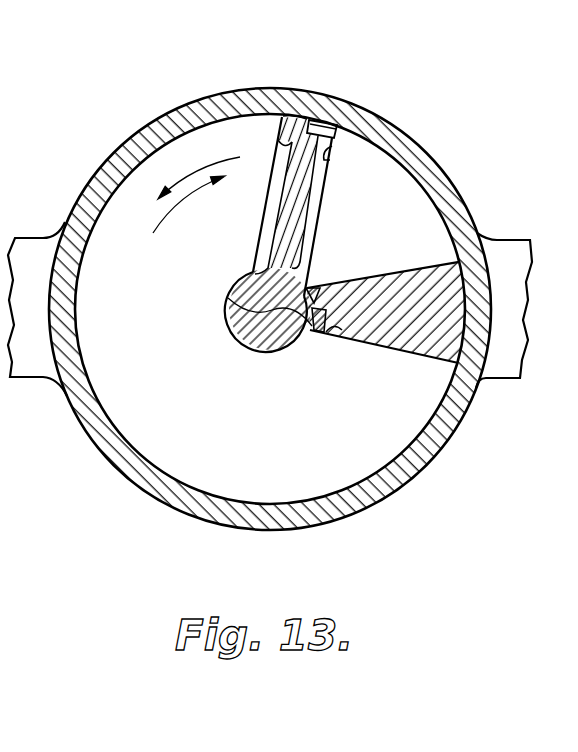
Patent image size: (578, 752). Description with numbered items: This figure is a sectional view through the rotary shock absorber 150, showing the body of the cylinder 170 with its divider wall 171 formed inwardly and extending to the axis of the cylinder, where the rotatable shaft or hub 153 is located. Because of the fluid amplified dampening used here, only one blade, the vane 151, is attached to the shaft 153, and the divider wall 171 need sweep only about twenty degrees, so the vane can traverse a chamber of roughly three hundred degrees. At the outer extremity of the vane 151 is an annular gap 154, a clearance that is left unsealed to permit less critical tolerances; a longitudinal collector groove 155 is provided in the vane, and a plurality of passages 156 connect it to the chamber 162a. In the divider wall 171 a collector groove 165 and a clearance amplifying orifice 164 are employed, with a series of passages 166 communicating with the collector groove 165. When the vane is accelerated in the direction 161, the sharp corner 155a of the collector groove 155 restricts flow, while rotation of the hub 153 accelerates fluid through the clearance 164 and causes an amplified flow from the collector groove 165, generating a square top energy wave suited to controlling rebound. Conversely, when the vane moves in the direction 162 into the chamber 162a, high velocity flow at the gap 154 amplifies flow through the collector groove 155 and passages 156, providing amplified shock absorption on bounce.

The rotary device assembly 150 is at (113, 111).
The vane 151 is at (287, 217).
The rotatable shaft 153 is at (258, 342).
The annular gap 154 is at (337, 117).
The longitudinal collector groove 155 is at (303, 112).
The sharp corner 155a is at (262, 97).
The passages 156 is at (318, 152).
The direction of vane acceleration 161 is at (240, 157).
The direction of vane movement 162 is at (152, 225).
The chamber 162a is at (407, 197).
The clearance amplifying orifice 164 is at (228, 298).
The collector groove 165 is at (318, 290).
The passages 166 is at (335, 337).
The cylinder 170 is at (257, 527).
The divider wall 171 is at (397, 345).